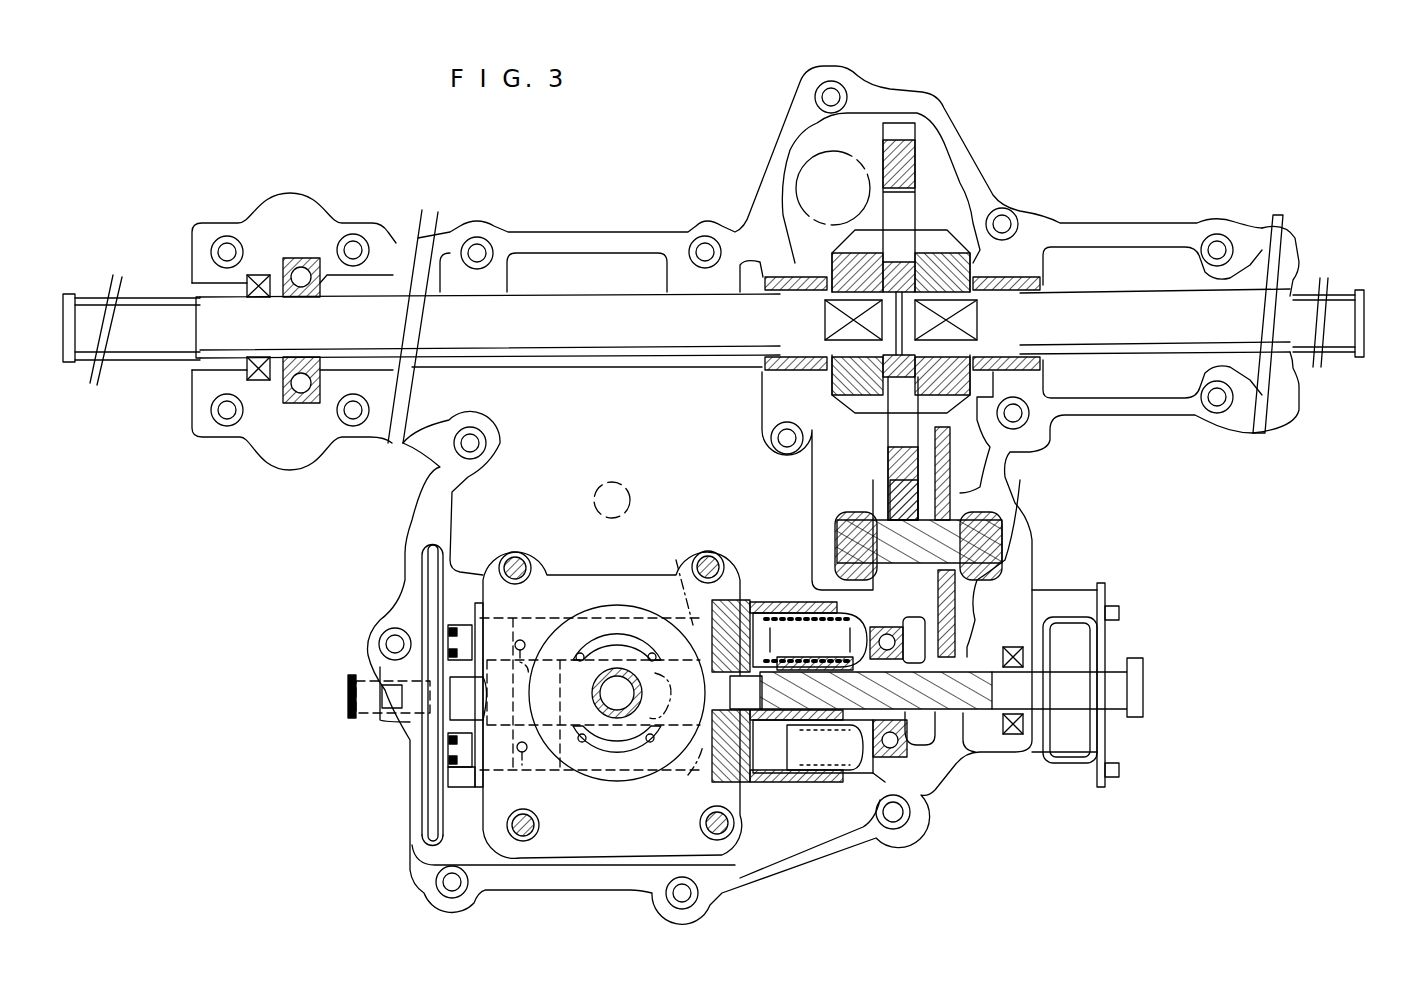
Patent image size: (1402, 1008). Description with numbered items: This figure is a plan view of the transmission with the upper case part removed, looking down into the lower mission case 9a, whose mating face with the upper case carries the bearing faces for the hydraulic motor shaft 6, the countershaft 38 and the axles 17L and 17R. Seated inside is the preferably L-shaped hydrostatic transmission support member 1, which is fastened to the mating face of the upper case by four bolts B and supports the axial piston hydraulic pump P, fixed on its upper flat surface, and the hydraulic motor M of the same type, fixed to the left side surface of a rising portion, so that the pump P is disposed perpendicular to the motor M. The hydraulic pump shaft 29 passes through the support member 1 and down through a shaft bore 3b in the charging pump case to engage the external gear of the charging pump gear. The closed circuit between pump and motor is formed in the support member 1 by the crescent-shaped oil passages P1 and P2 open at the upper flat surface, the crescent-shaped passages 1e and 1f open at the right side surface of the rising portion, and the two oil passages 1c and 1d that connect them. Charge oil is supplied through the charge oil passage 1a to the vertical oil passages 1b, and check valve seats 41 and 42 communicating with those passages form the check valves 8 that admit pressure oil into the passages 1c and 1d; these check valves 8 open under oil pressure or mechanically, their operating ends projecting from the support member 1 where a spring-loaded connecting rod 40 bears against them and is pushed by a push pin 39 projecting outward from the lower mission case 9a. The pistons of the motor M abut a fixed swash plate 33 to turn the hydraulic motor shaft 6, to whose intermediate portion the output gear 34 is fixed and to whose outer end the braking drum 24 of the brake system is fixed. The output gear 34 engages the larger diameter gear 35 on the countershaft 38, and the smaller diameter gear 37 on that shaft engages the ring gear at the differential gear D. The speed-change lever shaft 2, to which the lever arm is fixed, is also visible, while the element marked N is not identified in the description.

The lower mission case 9a is at (612, 232).
The axle 17R is at (696, 340).
The axle 17L is at (1142, 342).
The differential gear D is at (951, 182).
The smaller diameter gear 37 is at (886, 460).
The larger diameter gear 35 is at (952, 480).
The countershaft 38 is at (845, 548).
The speed-change lever shaft 2 is at (628, 492).
The hydrostatic transmission support member 1 is at (617, 575).
The charge oil passage 1a is at (590, 694).
The vertical oil passages 1b is at (516, 622).
The oil passage 1c is at (676, 560).
The oil passage 1d is at (688, 778).
The crescent-shaped oil passage 1e is at (740, 598).
The crescent-shaped oil passage 1f is at (744, 790).
The hydraulic motor M is at (775, 600).
The hydraulic pump P is at (616, 808).
The crescent-shaped oil passage P1 is at (608, 635).
The crescent-shaped oil passage P2 is at (630, 755).
The hydraulic pump shaft 29 is at (634, 712).
The shaft bore 3b is at (665, 704).
The check valves 8 is at (456, 634).
The check valve seat 41 is at (487, 690).
The check valve seat 42 is at (495, 790).
The push pin 39 is at (360, 715).
The connecting rod 40 is at (430, 778).
The fixed swash plate 33 is at (873, 778).
The output gear 34 is at (957, 742).
The braking drum 24 is at (1075, 765).
The hydraulic motor shaft 6 is at (936, 690).
The bolts B is at (717, 840).
The motor block N is at (828, 746).